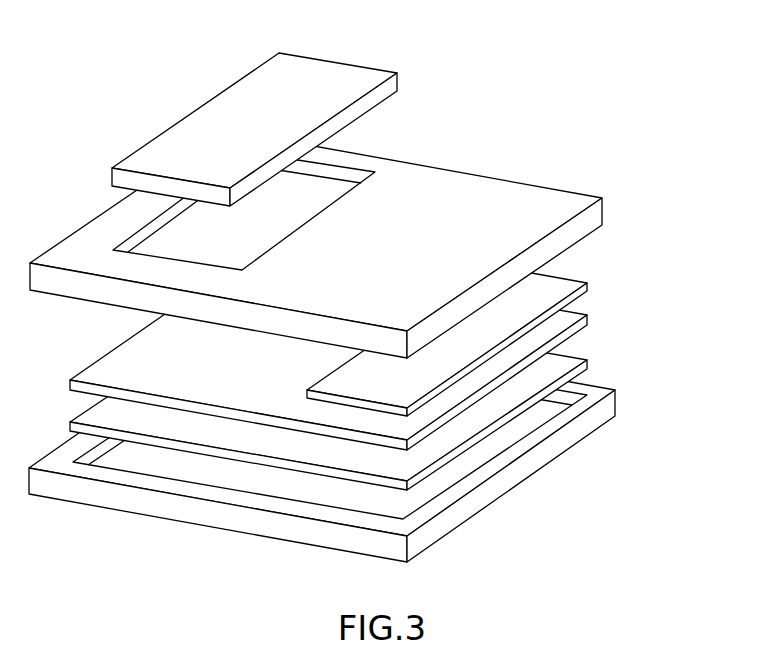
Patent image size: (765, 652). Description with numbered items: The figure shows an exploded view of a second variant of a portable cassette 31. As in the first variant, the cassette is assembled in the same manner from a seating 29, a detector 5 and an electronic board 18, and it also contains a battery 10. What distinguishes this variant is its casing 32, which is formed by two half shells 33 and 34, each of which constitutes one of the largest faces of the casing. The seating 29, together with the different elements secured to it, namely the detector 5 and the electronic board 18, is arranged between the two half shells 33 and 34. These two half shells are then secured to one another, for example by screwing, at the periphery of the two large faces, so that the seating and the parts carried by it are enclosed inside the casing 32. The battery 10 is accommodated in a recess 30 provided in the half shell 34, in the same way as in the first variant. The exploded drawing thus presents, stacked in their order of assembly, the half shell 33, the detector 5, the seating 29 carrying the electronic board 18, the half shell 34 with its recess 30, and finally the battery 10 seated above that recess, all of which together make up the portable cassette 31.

The detector 5 is at (131, 426).
The battery 10 is at (250, 142).
The electronic board 18 is at (416, 388).
The seating 29 is at (217, 372).
The recess 30 is at (240, 243).
The portable cassette 31 is at (355, 340).
The casing 32 is at (356, 310).
The half shell 33 is at (505, 480).
The half shell 34 is at (316, 244).